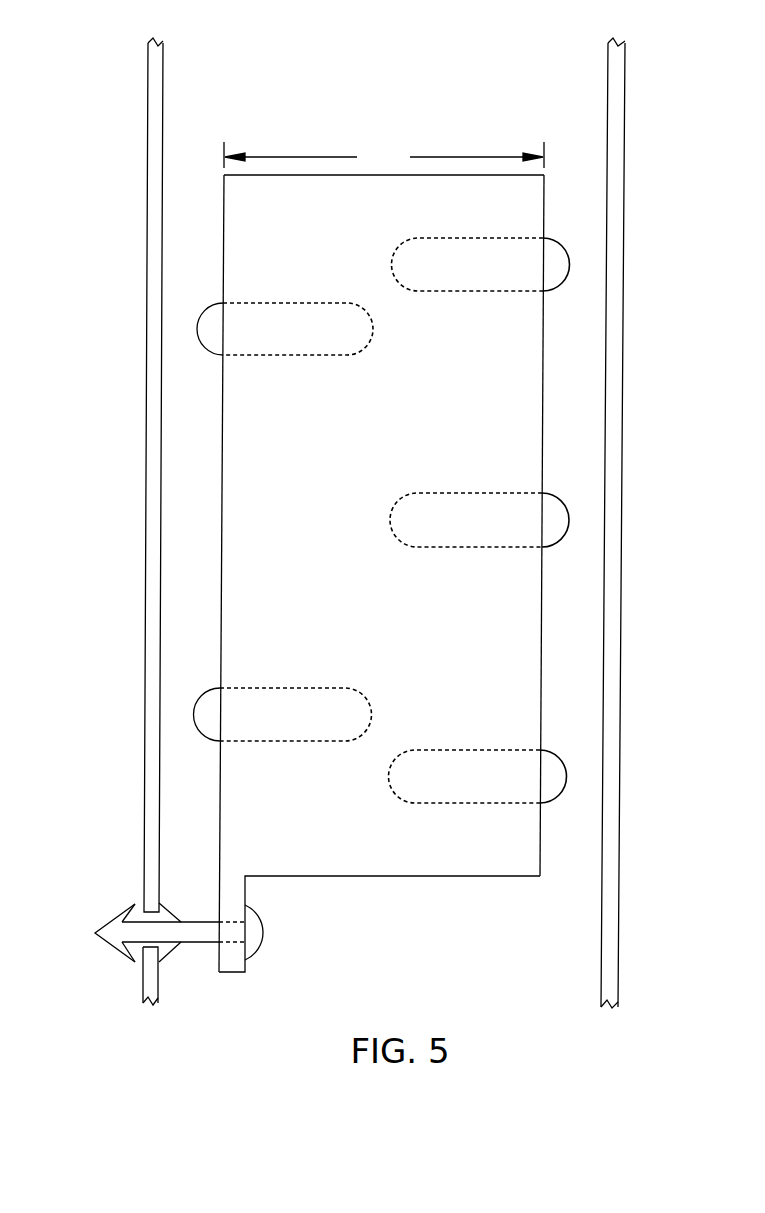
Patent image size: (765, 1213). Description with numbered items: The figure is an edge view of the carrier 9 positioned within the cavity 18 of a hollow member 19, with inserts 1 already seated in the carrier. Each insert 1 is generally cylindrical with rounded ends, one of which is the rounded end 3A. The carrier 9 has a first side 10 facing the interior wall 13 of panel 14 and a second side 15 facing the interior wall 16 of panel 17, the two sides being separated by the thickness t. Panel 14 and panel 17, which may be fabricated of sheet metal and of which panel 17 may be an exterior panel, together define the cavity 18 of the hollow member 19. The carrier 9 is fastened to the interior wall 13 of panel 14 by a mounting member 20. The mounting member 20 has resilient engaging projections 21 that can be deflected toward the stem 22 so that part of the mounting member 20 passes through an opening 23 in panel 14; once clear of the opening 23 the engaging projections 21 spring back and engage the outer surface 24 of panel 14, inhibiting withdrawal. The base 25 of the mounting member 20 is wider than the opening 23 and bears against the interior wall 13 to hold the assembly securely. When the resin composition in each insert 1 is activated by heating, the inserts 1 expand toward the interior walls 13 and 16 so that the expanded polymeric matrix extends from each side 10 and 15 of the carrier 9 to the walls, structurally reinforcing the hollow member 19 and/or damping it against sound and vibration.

The insert 1 is at (283, 317).
The rounded end 3A is at (201, 317).
The carrier 9 is at (572, 346).
The first side 10 is at (223, 233).
The interior wall 13 is at (164, 100).
The panel 14 is at (157, 40).
The second side 15 is at (545, 203).
The interior wall 16 is at (608, 84).
The panel 17 is at (622, 44).
The cavity 18 is at (427, 910).
The hollow member 19 is at (651, 488).
The mounting member 20 is at (197, 922).
The resilient engaging projections 21 is at (101, 947).
The stem 22 is at (131, 904).
The opening 23 is at (140, 947).
The outer surface 24 is at (143, 680).
The base 25 is at (163, 955).